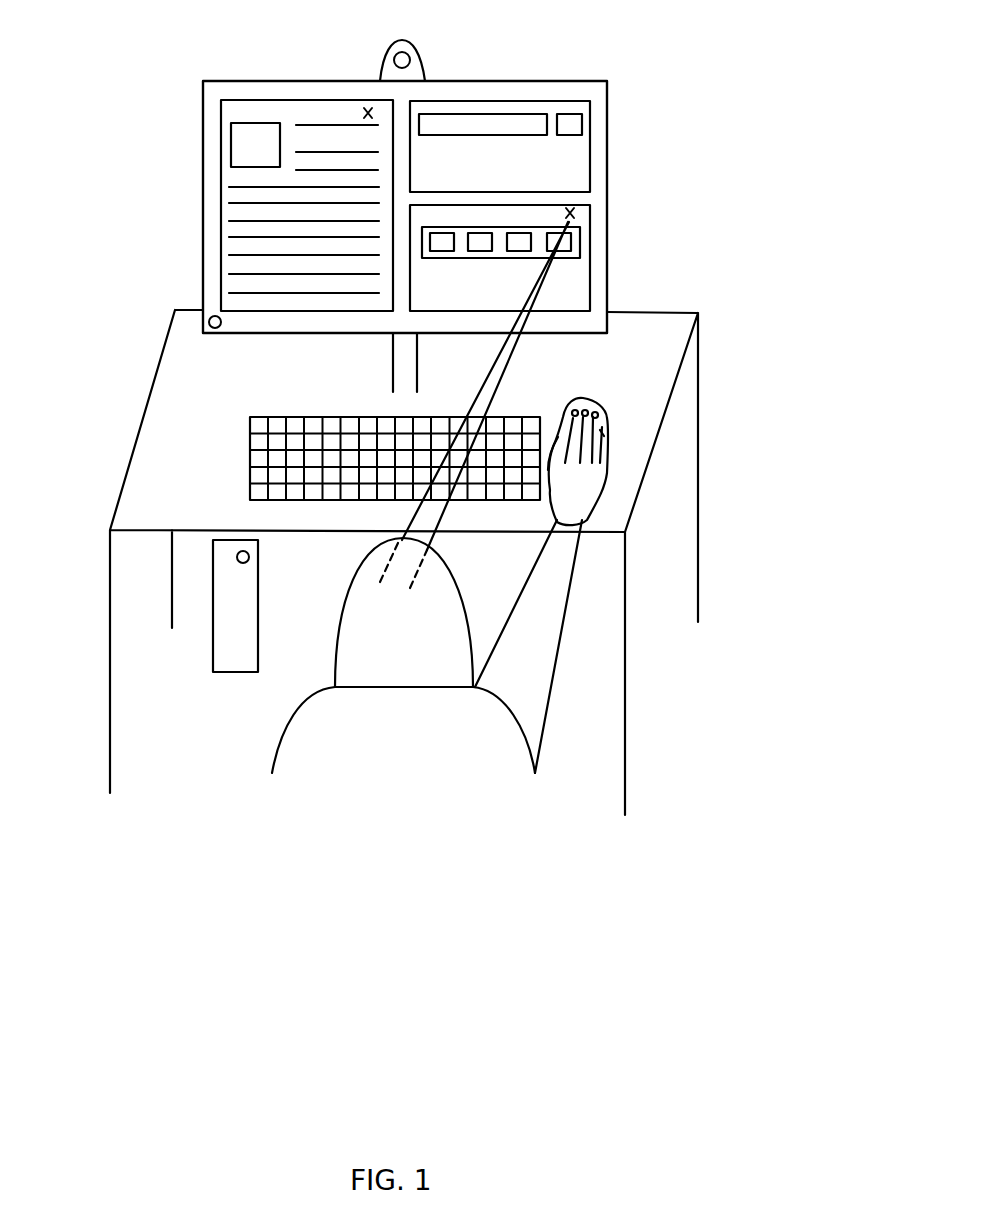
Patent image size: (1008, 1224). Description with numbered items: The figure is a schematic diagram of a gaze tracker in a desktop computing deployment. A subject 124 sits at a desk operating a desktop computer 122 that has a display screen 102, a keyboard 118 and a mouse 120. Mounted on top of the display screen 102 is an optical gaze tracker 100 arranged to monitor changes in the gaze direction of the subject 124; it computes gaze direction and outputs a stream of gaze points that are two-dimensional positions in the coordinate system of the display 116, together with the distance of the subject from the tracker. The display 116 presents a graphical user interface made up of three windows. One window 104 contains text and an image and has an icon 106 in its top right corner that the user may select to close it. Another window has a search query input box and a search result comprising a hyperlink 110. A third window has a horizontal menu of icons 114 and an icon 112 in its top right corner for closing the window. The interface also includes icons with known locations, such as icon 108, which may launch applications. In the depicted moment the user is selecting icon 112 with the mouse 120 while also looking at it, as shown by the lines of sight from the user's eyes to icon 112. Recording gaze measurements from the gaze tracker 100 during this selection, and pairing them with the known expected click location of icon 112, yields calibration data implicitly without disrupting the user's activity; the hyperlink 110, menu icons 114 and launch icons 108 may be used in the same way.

The optical gaze tracker 100 is at (420, 50).
The display screen 102 is at (537, 80).
The window 104 is at (218, 127).
The icon 106 is at (367, 107).
The icon 108 is at (208, 321).
The hyperlink 110 is at (420, 152).
The icon 112 is at (577, 210).
The horizontal menu of icons 114 is at (452, 243).
The display 116 is at (608, 103).
The keyboard 118 is at (248, 457).
The mouse 120 is at (603, 410).
The desktop computer 122 is at (212, 607).
The subject 124 is at (487, 733).